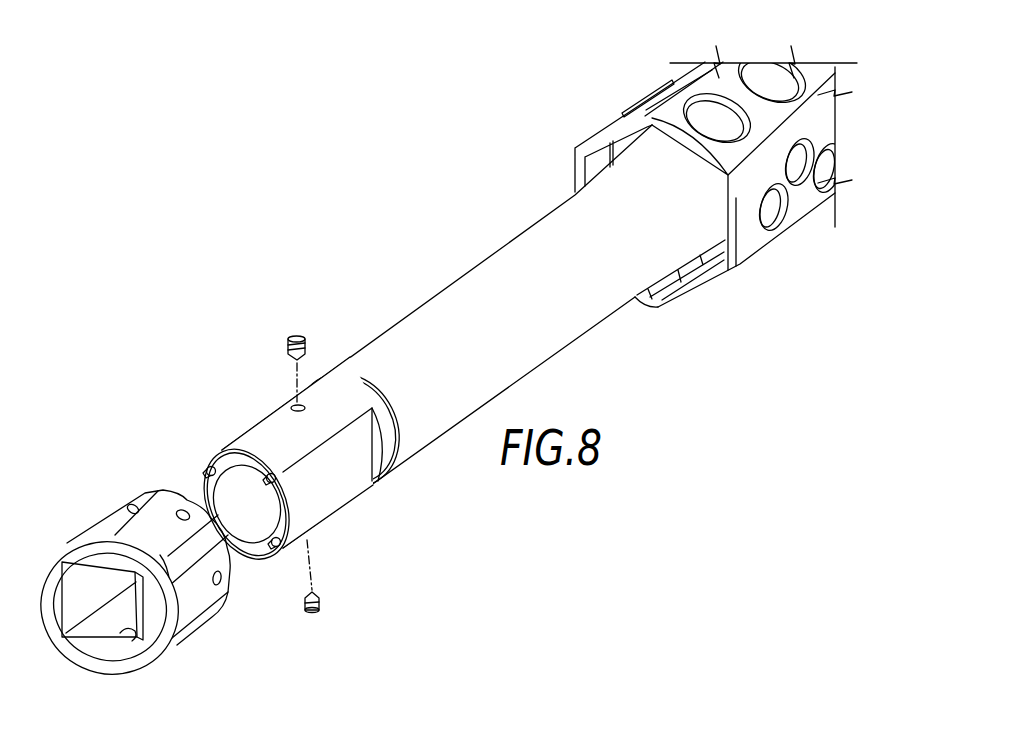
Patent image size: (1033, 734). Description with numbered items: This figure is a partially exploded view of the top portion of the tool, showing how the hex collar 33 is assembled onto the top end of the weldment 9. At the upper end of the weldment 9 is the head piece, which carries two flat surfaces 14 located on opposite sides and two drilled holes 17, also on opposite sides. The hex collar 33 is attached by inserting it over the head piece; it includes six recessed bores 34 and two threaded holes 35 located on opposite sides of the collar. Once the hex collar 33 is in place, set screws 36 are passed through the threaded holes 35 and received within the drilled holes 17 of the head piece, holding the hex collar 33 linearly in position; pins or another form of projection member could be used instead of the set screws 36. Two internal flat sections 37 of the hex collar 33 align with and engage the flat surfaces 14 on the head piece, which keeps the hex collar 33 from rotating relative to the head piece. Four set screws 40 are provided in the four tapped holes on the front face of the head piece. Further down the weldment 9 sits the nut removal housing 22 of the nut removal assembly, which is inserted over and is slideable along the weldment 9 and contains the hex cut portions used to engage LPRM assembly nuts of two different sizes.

The weldment 9 is at (574, 343).
The flat surfaces 14 is at (336, 494).
The drilled holes 17 is at (292, 397).
The nut removal housing 22 is at (753, 247).
The hex collar 33 is at (87, 527).
The recessed bores 34 is at (183, 510).
The threaded holes 35 is at (134, 504).
The set screws 36 is at (290, 337).
The internal flat sections 37 is at (83, 597).
The set screws 40 is at (210, 466).